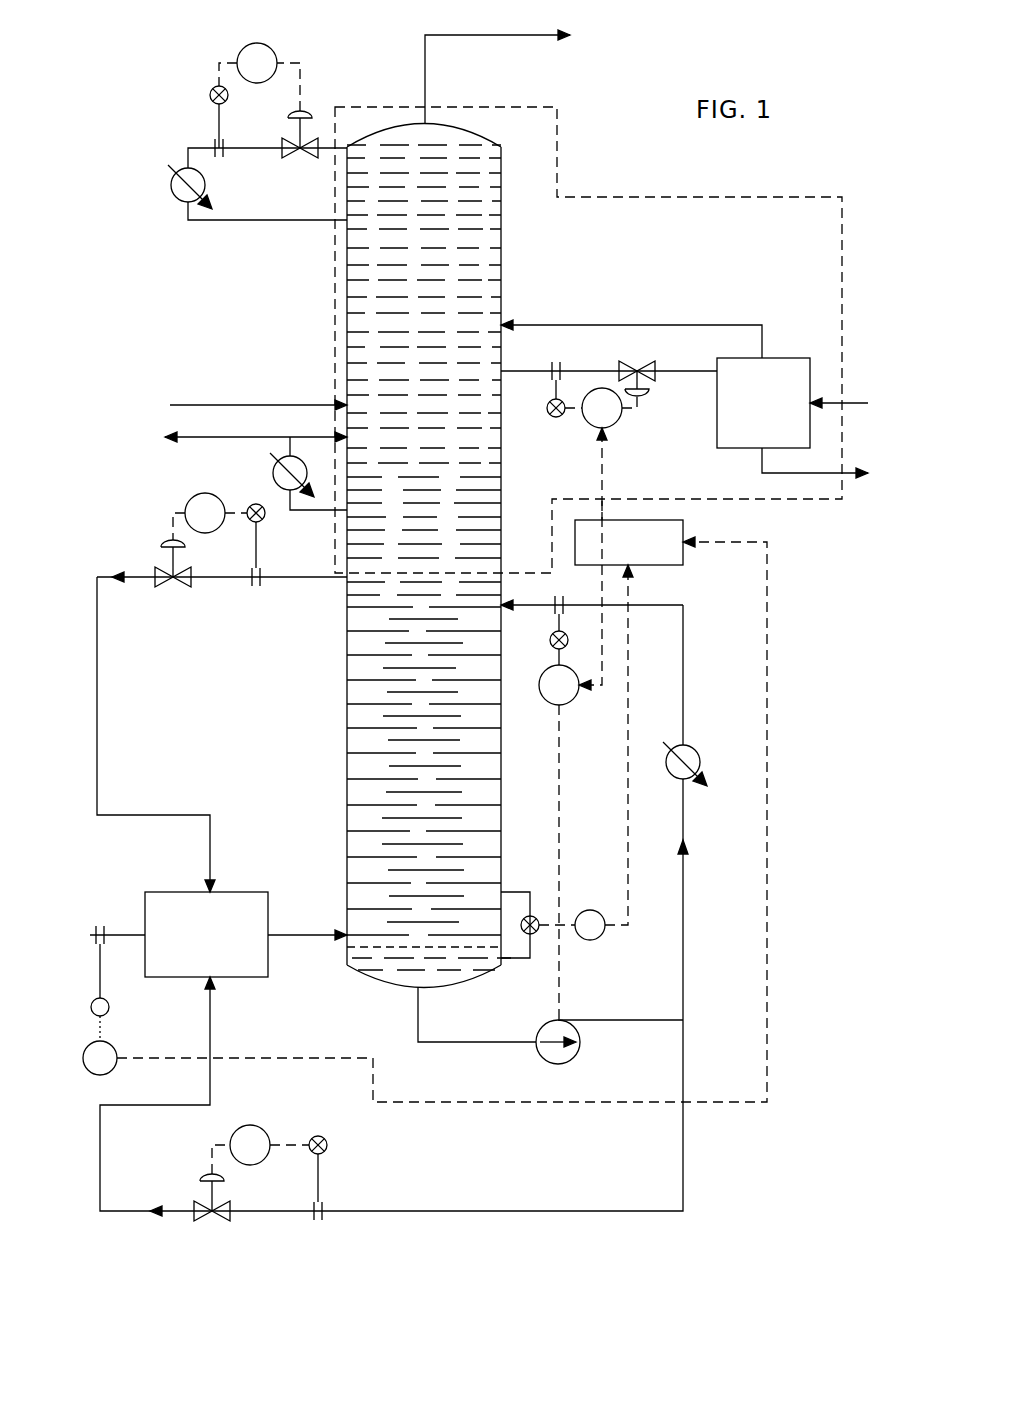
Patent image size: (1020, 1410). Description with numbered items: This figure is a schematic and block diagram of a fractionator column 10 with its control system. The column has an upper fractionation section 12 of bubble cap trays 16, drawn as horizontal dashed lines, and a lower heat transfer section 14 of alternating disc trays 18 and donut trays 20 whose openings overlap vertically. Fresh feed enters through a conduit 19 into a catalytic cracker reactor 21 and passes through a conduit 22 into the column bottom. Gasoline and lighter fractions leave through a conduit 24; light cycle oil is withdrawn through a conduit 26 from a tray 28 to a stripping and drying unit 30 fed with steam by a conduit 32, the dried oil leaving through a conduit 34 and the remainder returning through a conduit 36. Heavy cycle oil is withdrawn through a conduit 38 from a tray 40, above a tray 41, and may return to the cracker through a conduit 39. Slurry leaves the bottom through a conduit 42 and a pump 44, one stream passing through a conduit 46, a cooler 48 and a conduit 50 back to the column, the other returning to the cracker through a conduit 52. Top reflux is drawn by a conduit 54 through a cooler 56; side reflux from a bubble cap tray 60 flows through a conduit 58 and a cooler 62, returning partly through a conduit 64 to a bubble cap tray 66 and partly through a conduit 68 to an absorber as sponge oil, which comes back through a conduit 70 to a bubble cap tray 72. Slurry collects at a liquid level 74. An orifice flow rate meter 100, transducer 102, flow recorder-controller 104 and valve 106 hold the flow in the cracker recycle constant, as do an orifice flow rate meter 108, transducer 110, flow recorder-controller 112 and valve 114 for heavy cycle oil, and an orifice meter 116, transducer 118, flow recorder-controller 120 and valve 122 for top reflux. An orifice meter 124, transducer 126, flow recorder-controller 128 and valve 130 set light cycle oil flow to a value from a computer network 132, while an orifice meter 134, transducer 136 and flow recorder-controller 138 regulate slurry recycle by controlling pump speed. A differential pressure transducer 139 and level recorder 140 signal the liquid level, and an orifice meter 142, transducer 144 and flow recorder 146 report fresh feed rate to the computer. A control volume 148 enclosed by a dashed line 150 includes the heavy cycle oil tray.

The fractionator column 10 is at (282, 678).
The fractionation section 12 is at (502, 270).
The heat transfer section 14 is at (345, 825).
The bubble cap trays 16 is at (502, 203).
The disc trays 18 is at (395, 715).
The conduit 19 is at (127, 933).
The donut trays 20 is at (360, 775).
The catalytic cracker reactor 21 is at (262, 892).
The conduit 22 is at (284, 933).
The conduit 24 is at (425, 50).
The conduit 26 is at (508, 371).
The tray 28 is at (501, 371).
The stripping and drying unit 30 is at (717, 402).
The conduit 32 is at (873, 403).
The conduit 34 is at (838, 473).
The conduit 36 is at (636, 324).
The conduit 38 is at (288, 580).
The conduit 39 is at (97, 665).
The tray 40 is at (362, 555).
The tray 41 is at (499, 583).
The conduit 42 is at (470, 1042).
The pump 44 is at (581, 1043).
The conduit 46 is at (686, 920).
The cooler 48 is at (686, 747).
The conduit 50 is at (683, 687).
The conduit 52 is at (371, 1211).
The conduit 54 is at (273, 221).
The cooler 56 is at (172, 185).
The conduit 58 is at (306, 510).
The bubble cap tray 60 is at (498, 503).
The cooler 62 is at (274, 473).
The conduit 64 is at (298, 437).
The bubble cap tray 66 is at (376, 415).
The conduit 68 is at (203, 441).
The conduit 70 is at (287, 403).
The bubble cap tray 72 is at (373, 390).
The liquid level 74 is at (357, 960).
The orifice flow rate meter 100 is at (313, 1213).
The transducer 102 is at (328, 1146).
The flow recorder-controller 104 is at (248, 1123).
The valve 106 is at (203, 1178).
The orifice flow rate meter 108 is at (247, 585).
The transducer 110 is at (247, 520).
The flow recorder-controller 112 is at (192, 503).
The valve 114 is at (150, 543).
The orifice meter 116 is at (210, 144).
The transducer 118 is at (208, 94).
The flow recorder-controller 120 is at (250, 45).
The valve 122 is at (285, 145).
The orifice meter 124 is at (556, 371).
The transducer 126 is at (556, 416).
The flow recorder-controller 128 is at (618, 425).
The valve 130 is at (643, 373).
The computer network 132 is at (683, 558).
The orifice meter 134 is at (546, 610).
The transducer 136 is at (551, 638).
The flow recorder-controller 138 is at (547, 703).
The differential pressure transducer 139 is at (543, 908).
The level recorder 140 is at (592, 941).
The orifice meter 142 is at (111, 945).
The transducer 144 is at (91, 1009).
The flow recorder 146 is at (98, 1070).
The control volume 148 is at (716, 246).
The dashed line 150 is at (700, 197).